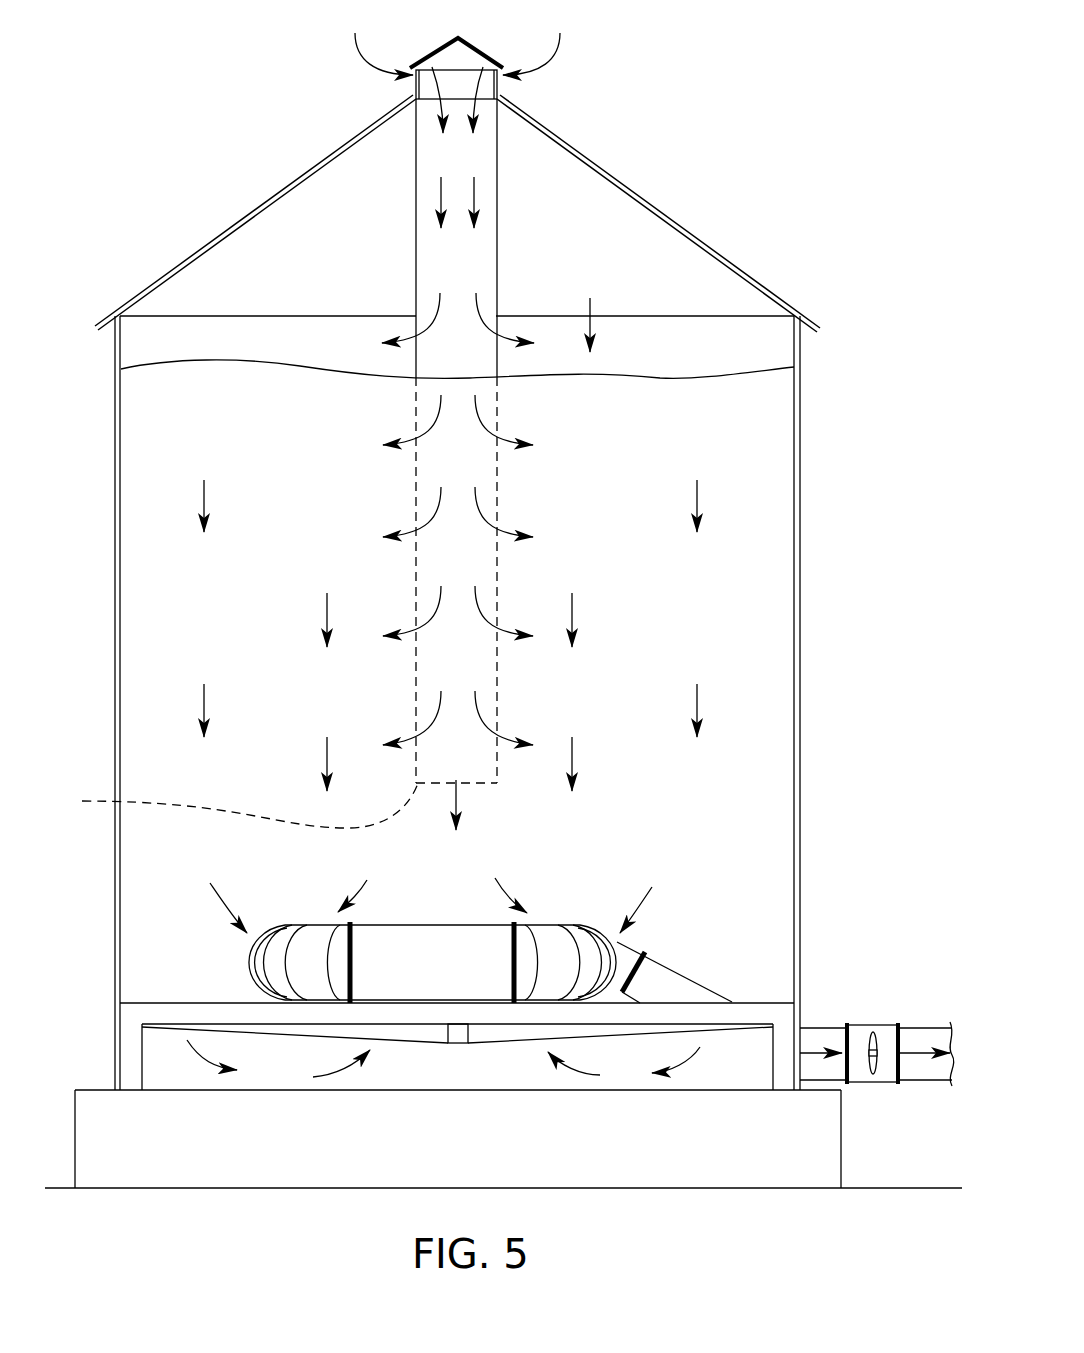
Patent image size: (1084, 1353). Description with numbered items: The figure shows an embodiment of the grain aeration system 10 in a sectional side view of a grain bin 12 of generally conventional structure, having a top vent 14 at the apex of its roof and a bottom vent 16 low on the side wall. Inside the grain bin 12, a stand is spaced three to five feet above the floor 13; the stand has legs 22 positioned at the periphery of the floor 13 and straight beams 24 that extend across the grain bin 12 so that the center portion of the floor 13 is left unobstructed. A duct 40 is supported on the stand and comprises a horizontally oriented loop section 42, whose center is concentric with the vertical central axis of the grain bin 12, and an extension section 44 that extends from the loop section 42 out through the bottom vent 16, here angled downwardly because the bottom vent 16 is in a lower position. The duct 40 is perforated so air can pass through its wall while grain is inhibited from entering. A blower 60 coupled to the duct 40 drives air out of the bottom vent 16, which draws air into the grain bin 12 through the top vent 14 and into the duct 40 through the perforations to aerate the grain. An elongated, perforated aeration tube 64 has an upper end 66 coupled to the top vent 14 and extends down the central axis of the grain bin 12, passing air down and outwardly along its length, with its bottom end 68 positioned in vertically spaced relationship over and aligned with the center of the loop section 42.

The grain aeration system 10 is at (797, 145).
The grain bin 12 is at (780, 548).
The floor 13 is at (418, 1082).
The top vent 14 is at (475, 63).
The bottom vent 16 is at (810, 1015).
The legs 22 is at (132, 1063).
The beams 24 is at (203, 1005).
The duct 40 is at (665, 946).
The loop section 42 is at (548, 940).
The extension section 44 is at (720, 997).
The blower 60 is at (873, 1082).
The aeration tube 64 is at (470, 245).
The upper end 66 is at (405, 122).
The bottom end 68 is at (230, 805).